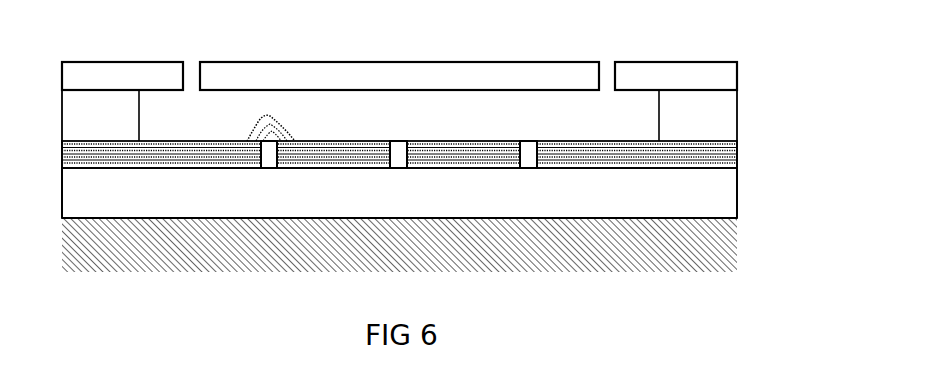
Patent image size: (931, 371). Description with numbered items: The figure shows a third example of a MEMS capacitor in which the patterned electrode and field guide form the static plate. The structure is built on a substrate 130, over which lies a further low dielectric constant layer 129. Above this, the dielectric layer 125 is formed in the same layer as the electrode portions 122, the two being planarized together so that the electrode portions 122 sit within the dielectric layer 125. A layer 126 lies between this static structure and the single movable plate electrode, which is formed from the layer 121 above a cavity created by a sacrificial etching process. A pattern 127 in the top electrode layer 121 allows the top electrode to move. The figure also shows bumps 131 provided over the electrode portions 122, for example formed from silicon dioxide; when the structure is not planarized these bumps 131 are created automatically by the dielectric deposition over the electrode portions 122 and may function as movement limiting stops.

The layer forming the movable plate electrode 121 is at (727, 71).
The electrode portions 122 is at (530, 141).
The dielectric layer 125 is at (733, 157).
The interlayer 126 is at (728, 123).
The pattern 127 is at (607, 63).
The low dielectric constant layer 129 is at (728, 193).
The substrate 130 is at (740, 240).
The bumps 131 is at (287, 130).